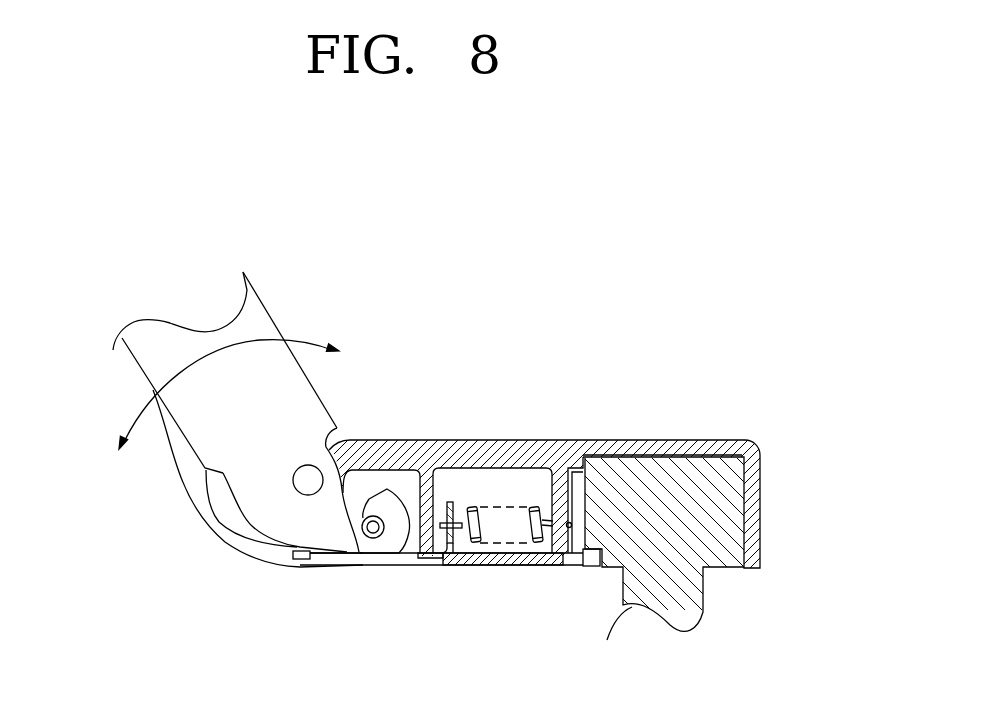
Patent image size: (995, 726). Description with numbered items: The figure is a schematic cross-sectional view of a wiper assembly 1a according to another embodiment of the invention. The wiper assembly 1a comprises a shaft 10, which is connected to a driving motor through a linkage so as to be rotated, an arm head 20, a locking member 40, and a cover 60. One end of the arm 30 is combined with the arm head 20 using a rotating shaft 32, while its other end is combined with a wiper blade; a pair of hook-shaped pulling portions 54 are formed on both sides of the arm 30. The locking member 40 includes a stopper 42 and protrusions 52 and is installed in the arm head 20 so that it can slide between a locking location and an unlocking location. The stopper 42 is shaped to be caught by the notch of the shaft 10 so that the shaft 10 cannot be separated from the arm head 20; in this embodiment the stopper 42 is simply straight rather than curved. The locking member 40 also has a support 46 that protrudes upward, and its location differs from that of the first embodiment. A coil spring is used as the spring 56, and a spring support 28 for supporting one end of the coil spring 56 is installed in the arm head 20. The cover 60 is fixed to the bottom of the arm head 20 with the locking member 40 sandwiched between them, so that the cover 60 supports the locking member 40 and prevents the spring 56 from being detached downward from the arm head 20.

The wiper assembly 1a is at (505, 290).
The shaft 10 is at (712, 600).
The arm head 20 is at (657, 432).
The spring support 28 is at (557, 493).
The arm 30 is at (266, 304).
The rotating shaft 32 is at (310, 478).
The locking member 40 is at (408, 568).
The stopper 42 is at (577, 560).
The support 46 is at (450, 502).
The protrusions 52 is at (303, 560).
The pulling portions 54 is at (318, 557).
The spring 56 is at (475, 507).
The cover 60 is at (470, 565).